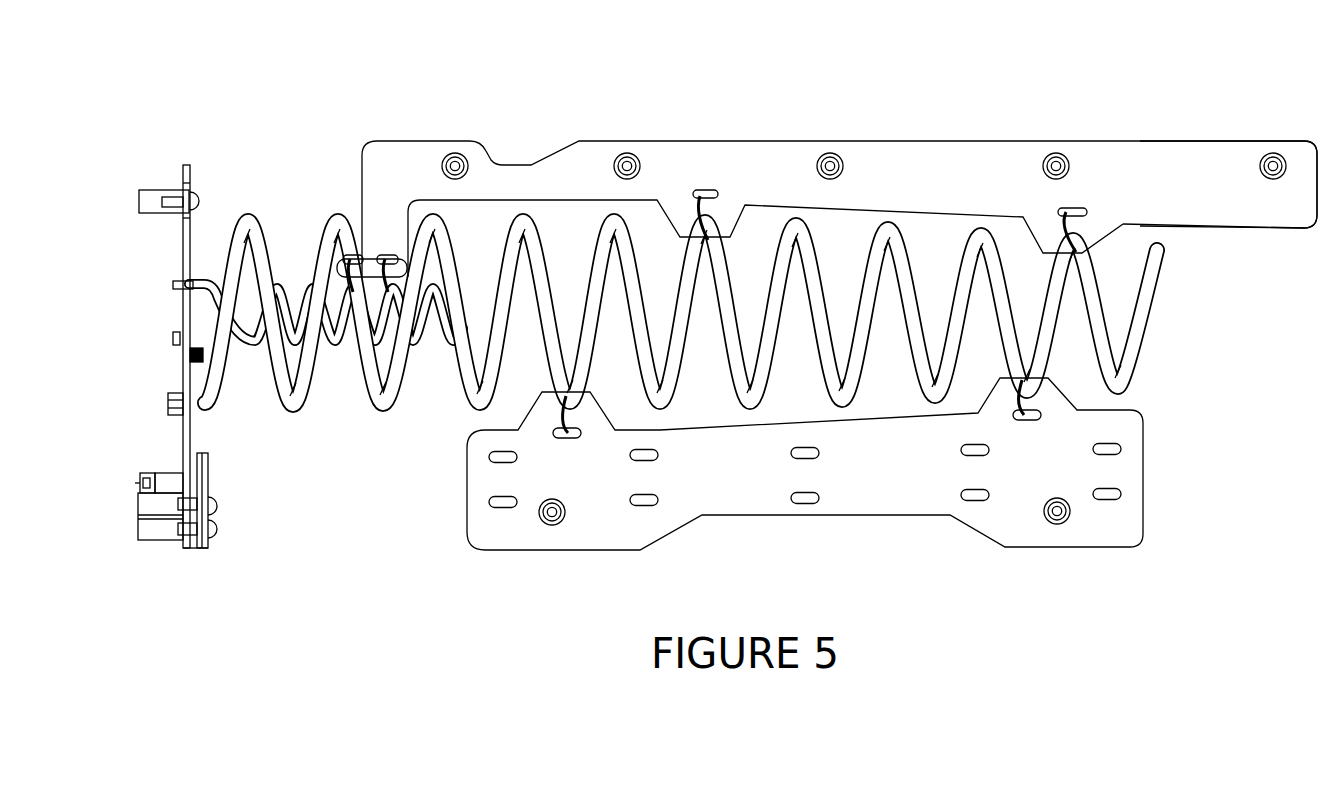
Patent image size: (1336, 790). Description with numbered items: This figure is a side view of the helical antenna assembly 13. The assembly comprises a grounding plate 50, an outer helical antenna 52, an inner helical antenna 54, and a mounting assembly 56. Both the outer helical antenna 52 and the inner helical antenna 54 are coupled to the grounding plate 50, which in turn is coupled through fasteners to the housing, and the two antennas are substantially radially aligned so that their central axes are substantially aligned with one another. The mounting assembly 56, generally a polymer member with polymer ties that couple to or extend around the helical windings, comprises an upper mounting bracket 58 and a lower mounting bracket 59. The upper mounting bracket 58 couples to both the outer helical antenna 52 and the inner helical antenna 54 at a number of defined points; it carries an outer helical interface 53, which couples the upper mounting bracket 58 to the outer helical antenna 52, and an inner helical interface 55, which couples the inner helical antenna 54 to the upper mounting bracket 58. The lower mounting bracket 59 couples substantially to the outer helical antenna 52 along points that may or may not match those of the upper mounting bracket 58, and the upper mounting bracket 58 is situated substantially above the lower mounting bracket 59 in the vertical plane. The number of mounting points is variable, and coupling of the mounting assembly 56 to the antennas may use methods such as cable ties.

The helical antenna assembly 13 is at (254, 137).
The grounding plate 50 is at (144, 261).
The outer helical antenna 52 is at (1147, 333).
The outer helical interface 53 is at (1084, 236).
The inner helical antenna 54 is at (255, 378).
The inner helical interface 55 is at (346, 256).
The mounting assembly 56 is at (922, 128).
The upper mounting bracket 58 is at (1210, 140).
The lower mounting bracket 59 is at (805, 530).